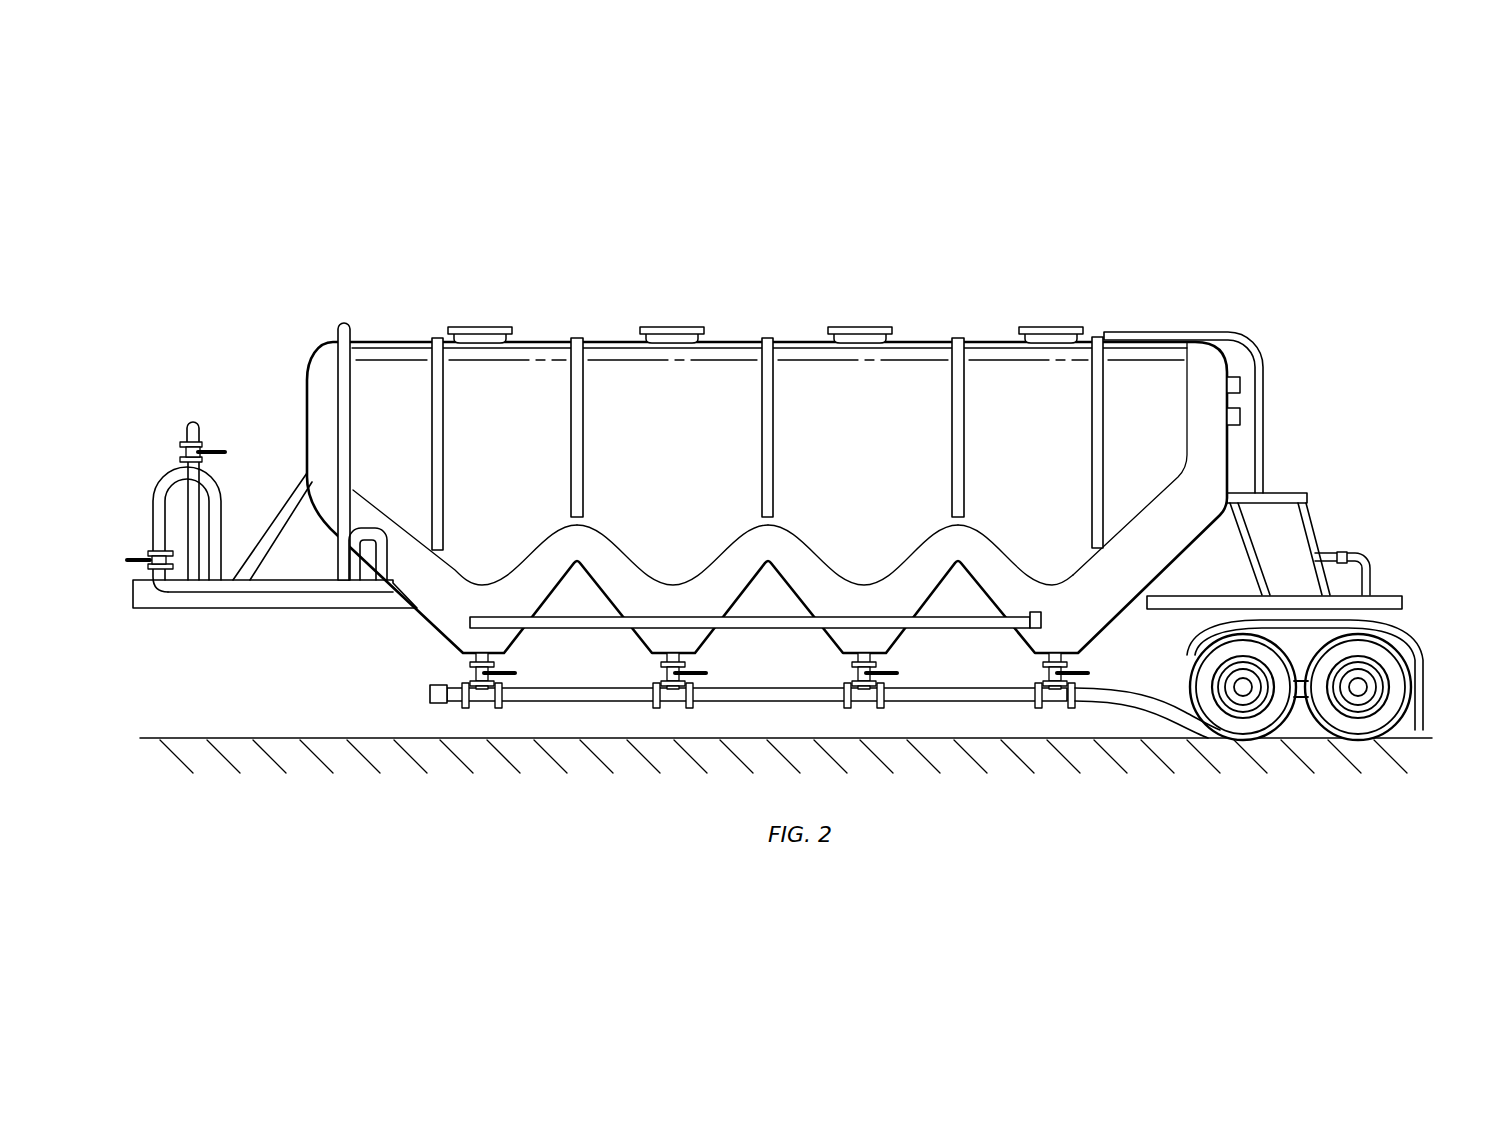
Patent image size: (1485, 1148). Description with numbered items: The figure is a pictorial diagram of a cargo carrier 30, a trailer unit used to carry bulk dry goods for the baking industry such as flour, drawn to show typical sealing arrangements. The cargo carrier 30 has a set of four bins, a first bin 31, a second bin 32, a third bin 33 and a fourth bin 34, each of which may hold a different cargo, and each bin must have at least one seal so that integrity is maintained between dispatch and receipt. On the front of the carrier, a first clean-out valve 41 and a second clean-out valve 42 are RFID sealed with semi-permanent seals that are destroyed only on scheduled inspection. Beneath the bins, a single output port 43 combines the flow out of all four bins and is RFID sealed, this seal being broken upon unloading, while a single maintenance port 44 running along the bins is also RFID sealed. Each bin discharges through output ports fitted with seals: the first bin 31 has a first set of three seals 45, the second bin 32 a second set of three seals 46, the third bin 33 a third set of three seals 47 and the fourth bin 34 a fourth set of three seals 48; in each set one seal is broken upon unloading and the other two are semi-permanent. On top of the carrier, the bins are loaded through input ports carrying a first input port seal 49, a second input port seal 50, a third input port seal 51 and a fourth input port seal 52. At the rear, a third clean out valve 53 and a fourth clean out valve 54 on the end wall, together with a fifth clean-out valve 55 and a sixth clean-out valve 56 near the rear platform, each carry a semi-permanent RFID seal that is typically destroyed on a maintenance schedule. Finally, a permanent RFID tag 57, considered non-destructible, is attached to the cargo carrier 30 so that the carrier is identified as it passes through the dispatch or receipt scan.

The cargo carrier 30 is at (985, 198).
The first bin 31 is at (466, 566).
The second bin 32 is at (658, 566).
The third bin 33 is at (848, 566).
The fourth bin 34 is at (1038, 566).
The first clean-out valve 41 is at (145, 554).
The second clean-out valve 42 is at (180, 452).
The single output port 43 is at (430, 691).
The single maintenance port 44 is at (1044, 620).
The first set of three seals 45 is at (448, 665).
The second set of three seals 46 is at (640, 665).
The third set of three seals 47 is at (831, 665).
The fourth set of three seals 48 is at (1021, 665).
The first input port seal 49 is at (481, 327).
The second input port seal 50 is at (673, 327).
The third input port seal 51 is at (859, 327).
The fourth input port seal 52 is at (1050, 327).
The third clean out valve 53 is at (1240, 385).
The fourth clean out valve 54 is at (1240, 416).
The fifth clean-out valve 55 is at (1343, 550).
The sixth clean-out valve 56 is at (1388, 595).
The permanent RFID tag 57 is at (1410, 612).